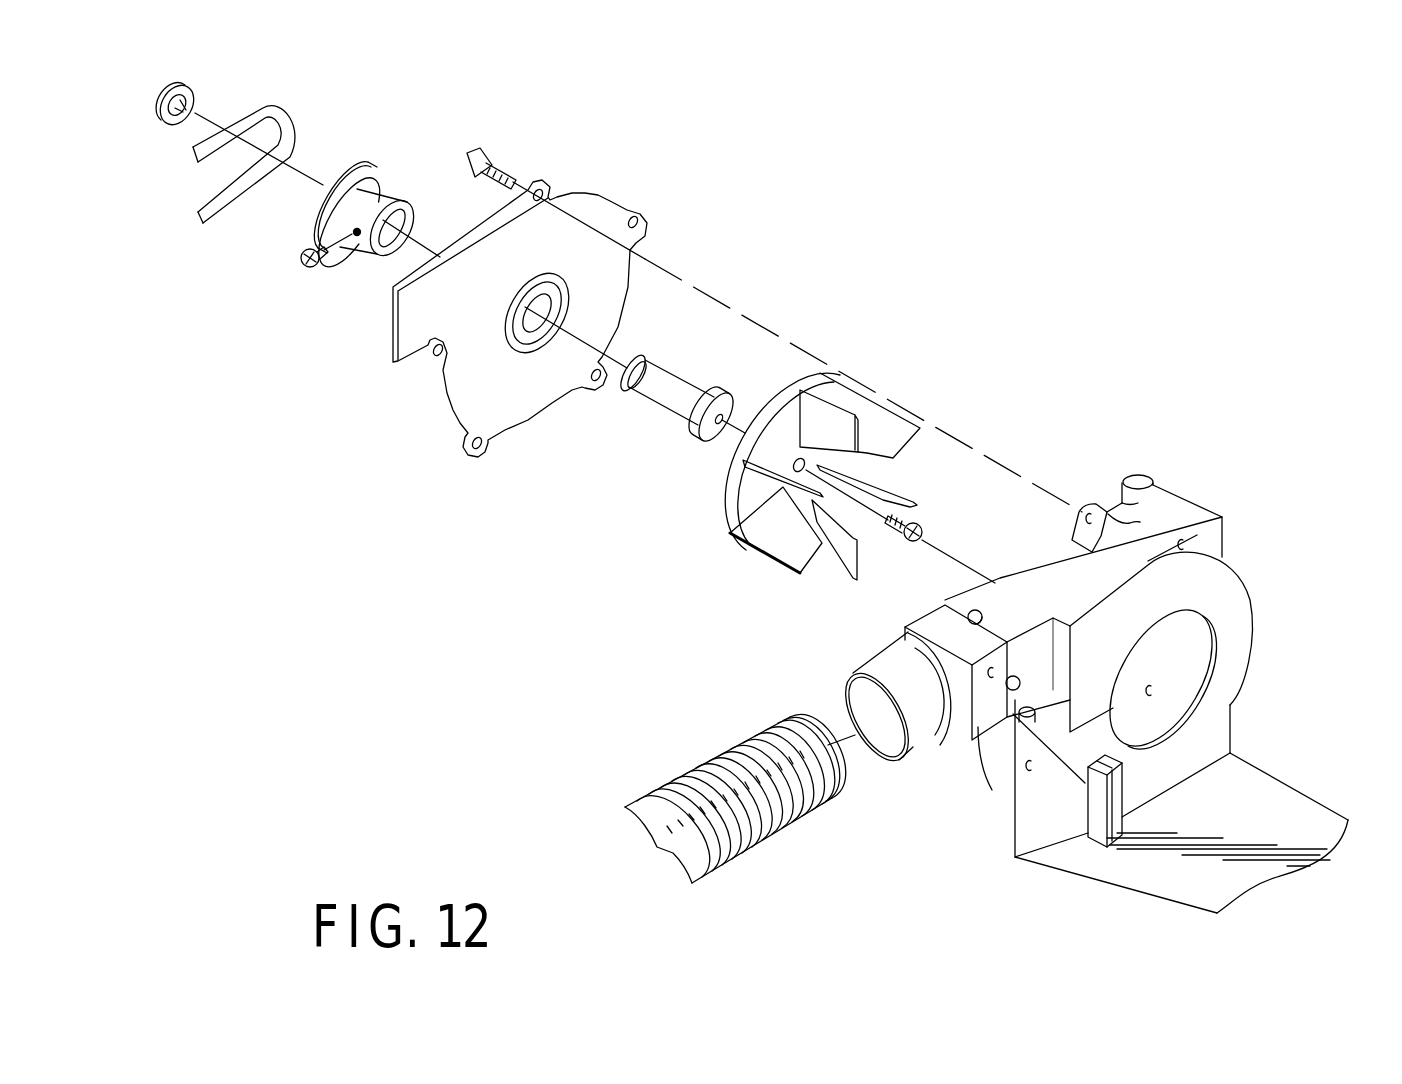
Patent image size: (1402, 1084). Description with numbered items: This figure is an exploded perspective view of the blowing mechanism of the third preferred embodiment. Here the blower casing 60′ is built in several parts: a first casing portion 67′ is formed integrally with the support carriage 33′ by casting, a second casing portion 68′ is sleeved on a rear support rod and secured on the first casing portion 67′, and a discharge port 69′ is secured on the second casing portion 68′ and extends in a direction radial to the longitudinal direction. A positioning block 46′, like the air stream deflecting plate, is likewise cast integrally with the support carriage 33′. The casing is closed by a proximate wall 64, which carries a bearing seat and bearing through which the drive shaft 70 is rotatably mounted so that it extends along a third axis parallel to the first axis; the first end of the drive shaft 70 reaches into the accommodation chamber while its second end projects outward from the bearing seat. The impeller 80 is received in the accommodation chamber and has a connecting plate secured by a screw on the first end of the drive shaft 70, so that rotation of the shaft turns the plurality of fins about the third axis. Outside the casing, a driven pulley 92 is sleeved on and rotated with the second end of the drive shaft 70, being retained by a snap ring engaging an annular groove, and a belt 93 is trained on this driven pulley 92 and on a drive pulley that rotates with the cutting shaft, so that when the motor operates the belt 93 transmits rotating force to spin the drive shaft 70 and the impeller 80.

The belt 93 is at (292, 132).
The driven pulley 92 is at (380, 170).
The proximate wall 64 is at (588, 196).
The drive shaft 70 is at (685, 352).
The impeller 80 is at (720, 556).
The blower casing 60′ is at (1108, 670).
The first casing portion 67′ is at (1247, 677).
The second casing portion 68′ is at (1223, 563).
The discharge port 69′ is at (985, 727).
The positioning block 46′ is at (1097, 813).
The support carriage 33′ is at (1193, 878).